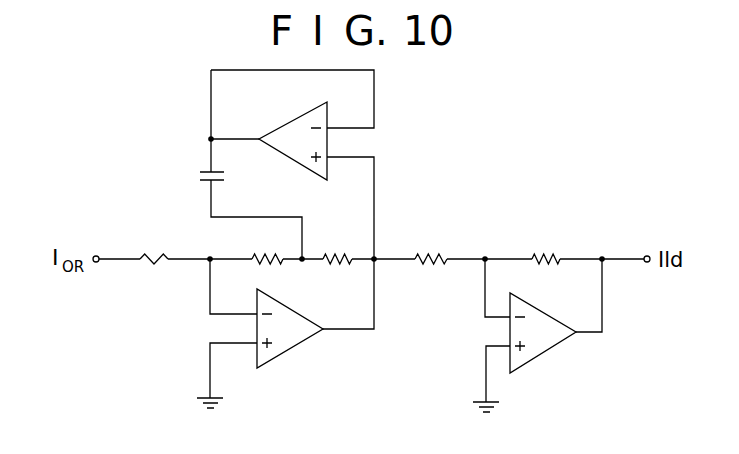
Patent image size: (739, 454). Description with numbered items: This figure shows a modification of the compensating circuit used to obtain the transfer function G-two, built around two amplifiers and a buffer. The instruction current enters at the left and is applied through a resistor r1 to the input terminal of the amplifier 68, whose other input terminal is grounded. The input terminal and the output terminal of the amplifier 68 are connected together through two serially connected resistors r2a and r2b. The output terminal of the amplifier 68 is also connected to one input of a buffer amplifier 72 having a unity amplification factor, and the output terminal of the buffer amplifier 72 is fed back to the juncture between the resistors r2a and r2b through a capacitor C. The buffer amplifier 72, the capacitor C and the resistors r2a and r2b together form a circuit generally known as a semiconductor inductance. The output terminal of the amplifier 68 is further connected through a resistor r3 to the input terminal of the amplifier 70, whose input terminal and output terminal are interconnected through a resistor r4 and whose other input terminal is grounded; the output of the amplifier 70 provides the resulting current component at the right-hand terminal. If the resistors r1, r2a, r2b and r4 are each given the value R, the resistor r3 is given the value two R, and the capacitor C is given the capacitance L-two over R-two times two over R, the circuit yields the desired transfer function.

The amplifier 68 is at (301, 346).
The amplifier 70 is at (557, 347).
The buffer amplifier 72 is at (284, 131).
The resistor r1 is at (154, 229).
The resistor r2a is at (287, 250).
The resistor r2b is at (360, 250).
The resistor r3 is at (432, 233).
The resistor r4 is at (546, 233).
The capacitor C is at (160, 183).